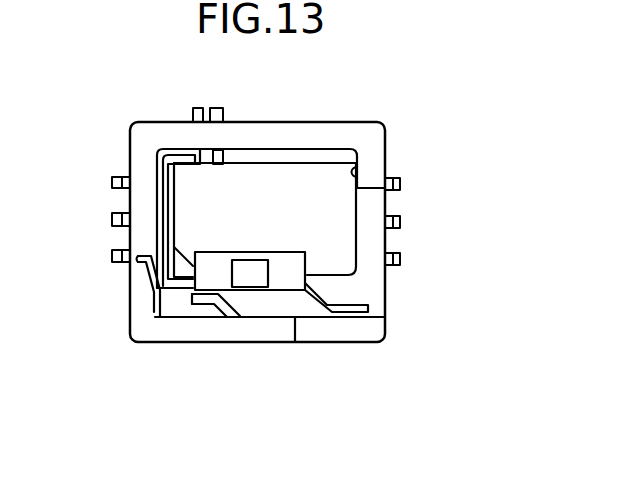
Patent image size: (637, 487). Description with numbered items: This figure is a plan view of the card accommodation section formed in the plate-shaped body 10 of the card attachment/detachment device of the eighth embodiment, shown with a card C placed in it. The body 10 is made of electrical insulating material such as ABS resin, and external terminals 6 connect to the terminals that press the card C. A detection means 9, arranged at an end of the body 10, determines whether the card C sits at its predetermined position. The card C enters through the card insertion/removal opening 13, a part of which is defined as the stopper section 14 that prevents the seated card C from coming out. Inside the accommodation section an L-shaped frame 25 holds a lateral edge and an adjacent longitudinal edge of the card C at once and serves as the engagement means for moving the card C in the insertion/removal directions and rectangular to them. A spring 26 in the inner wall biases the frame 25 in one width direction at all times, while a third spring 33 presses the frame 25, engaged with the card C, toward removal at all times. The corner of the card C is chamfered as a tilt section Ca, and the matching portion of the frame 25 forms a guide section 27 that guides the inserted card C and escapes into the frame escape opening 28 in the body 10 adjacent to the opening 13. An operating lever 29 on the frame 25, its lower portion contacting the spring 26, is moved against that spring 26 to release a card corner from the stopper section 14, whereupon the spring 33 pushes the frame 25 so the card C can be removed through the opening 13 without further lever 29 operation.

The body 10 is at (385, 124).
The detection means 9 is at (219, 109).
The external terminals 6 is at (111, 221).
The stopper section 14 is at (363, 163).
The card C is at (277, 184).
The frame 25 is at (183, 150).
The spring (third biasing means) 33 is at (153, 300).
The tilt section Ca is at (180, 253).
The spring (second biasing means) 26 is at (221, 310).
The operating lever 29 is at (255, 278).
The card insertion/removal opening 13 is at (376, 297).
The guide section 27 is at (362, 320).
The frame escape opening 28 is at (358, 334).